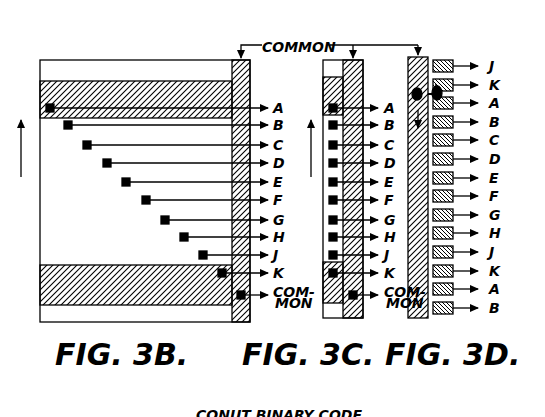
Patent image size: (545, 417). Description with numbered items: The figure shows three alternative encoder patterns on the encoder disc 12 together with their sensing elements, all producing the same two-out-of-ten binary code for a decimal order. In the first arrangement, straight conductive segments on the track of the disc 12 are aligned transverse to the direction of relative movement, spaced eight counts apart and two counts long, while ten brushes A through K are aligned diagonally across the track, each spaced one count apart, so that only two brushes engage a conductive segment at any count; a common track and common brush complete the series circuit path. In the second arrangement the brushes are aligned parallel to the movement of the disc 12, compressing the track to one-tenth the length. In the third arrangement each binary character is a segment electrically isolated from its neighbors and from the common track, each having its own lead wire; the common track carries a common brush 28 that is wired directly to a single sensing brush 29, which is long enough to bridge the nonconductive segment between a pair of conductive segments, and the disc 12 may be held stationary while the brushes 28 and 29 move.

In FIG. 3B, the encoder disc 12 is at (62, 211).
In FIG. 3C, the encoder disc 12 is at (337, 314).
In FIG. 3D, the encoder disc 12 is at (437, 313).
In FIG. 3D, the common brush 28 is at (412, 95).
In FIG. 3D, the sensing brush 29 is at (438, 86).